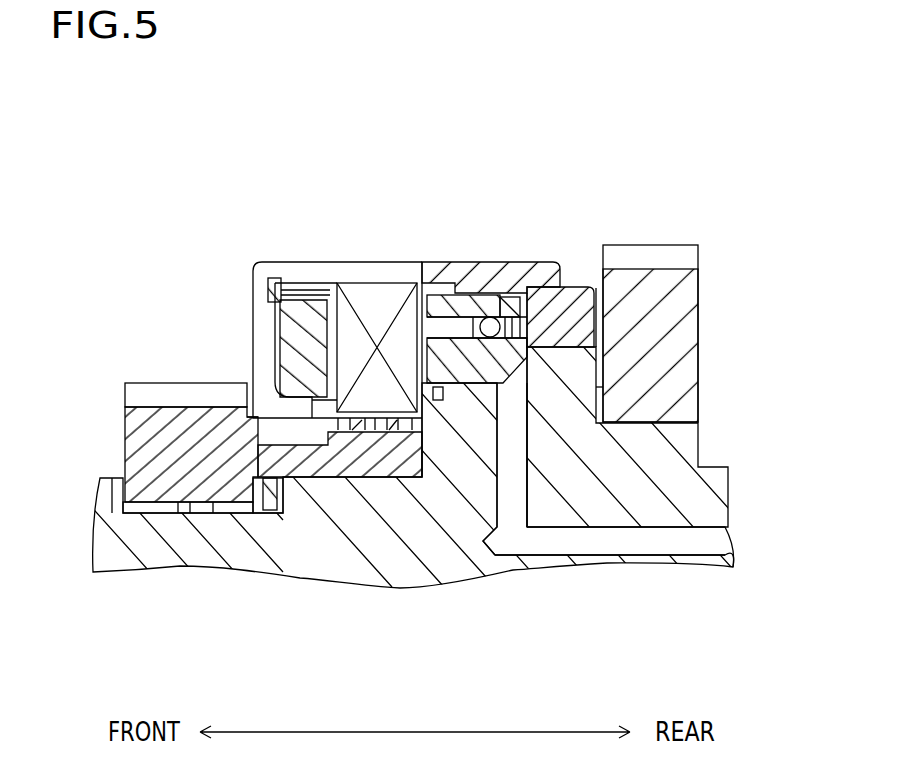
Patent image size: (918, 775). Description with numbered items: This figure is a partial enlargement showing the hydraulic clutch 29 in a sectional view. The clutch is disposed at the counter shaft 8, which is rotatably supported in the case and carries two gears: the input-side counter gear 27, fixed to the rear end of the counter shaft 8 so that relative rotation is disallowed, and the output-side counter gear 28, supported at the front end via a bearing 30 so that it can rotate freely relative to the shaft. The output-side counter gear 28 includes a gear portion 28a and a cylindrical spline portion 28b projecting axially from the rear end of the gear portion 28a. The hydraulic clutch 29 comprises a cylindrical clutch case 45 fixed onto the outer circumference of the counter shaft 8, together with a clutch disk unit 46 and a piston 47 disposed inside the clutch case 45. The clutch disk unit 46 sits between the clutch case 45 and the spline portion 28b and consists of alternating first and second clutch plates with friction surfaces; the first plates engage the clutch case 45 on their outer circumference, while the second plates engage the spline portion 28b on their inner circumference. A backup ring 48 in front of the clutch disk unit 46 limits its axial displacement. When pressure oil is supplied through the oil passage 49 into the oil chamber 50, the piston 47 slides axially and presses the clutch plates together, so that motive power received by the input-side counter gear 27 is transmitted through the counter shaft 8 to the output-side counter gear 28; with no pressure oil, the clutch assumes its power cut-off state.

The counter shaft 8 is at (100, 527).
The input-side counter gear 27 is at (677, 337).
The output-side counter gear 28 is at (214, 377).
The gear portion 28a is at (138, 430).
The cylindrical spline portion 28b is at (257, 407).
The hydraulic clutch 29 is at (340, 240).
The bearing 30 is at (213, 508).
The clutch case 45 is at (470, 283).
The clutch disk unit 46 is at (378, 297).
The piston 47 is at (507, 287).
The backup ring 48 is at (300, 285).
The oil passage 49 is at (527, 495).
The oil chamber 50 is at (531, 353).